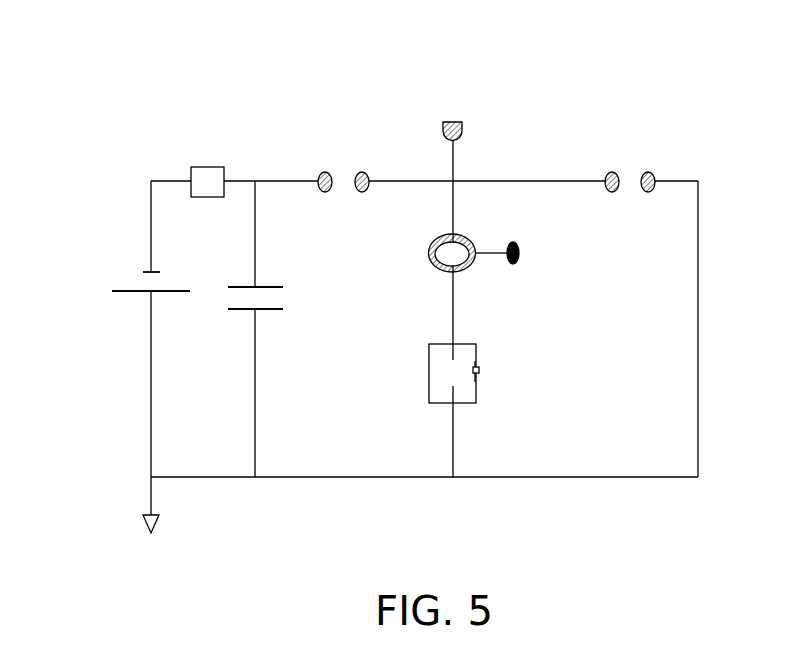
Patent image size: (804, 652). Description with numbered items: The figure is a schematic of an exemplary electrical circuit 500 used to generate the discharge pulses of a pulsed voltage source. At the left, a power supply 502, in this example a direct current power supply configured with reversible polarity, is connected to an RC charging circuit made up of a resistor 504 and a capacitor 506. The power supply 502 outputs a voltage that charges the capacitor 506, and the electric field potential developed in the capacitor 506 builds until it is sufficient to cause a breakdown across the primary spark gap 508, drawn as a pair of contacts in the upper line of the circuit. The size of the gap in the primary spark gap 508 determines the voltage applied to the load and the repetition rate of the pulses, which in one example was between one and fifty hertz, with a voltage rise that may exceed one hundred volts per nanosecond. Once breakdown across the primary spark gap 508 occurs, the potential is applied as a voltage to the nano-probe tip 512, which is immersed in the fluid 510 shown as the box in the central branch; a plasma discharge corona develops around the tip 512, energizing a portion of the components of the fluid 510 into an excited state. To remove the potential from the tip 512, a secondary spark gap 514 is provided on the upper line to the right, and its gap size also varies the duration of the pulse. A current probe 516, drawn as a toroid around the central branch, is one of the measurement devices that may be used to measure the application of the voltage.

The electrical circuit 500 is at (474, 29).
The power supply 502 is at (85, 270).
The resistor 504 is at (206, 167).
The capacitor 506 is at (248, 309).
The primary spark gap 508 is at (343, 180).
The fluid 510 is at (443, 372).
The nano-probe tip 512 is at (475, 358).
The secondary spark gap 514 is at (628, 168).
The current probe 516 is at (432, 240).